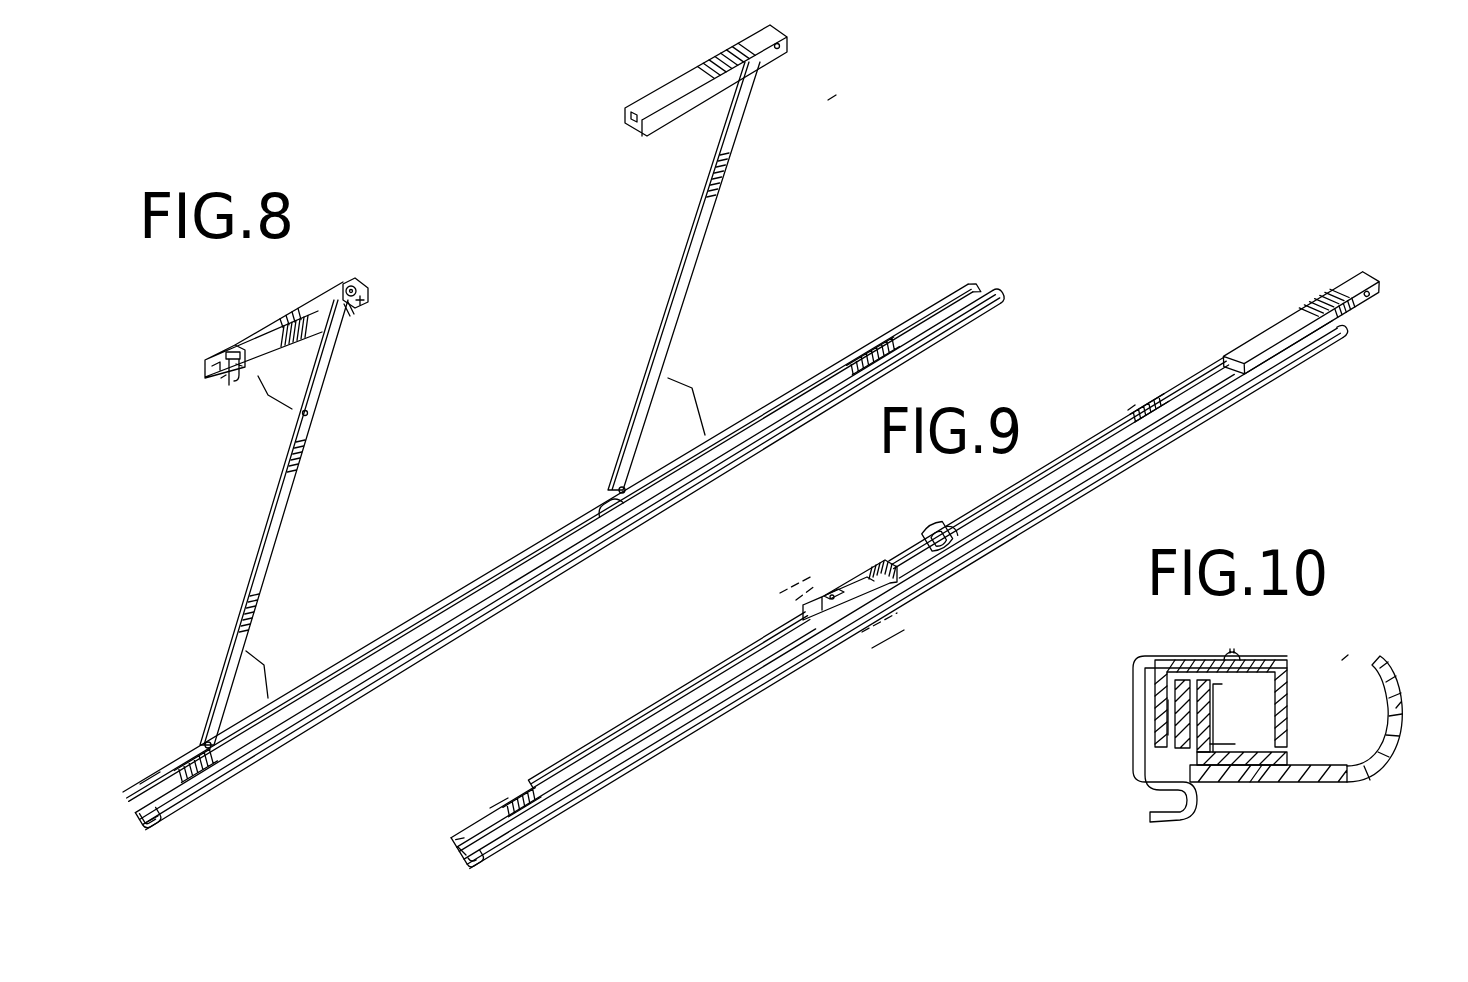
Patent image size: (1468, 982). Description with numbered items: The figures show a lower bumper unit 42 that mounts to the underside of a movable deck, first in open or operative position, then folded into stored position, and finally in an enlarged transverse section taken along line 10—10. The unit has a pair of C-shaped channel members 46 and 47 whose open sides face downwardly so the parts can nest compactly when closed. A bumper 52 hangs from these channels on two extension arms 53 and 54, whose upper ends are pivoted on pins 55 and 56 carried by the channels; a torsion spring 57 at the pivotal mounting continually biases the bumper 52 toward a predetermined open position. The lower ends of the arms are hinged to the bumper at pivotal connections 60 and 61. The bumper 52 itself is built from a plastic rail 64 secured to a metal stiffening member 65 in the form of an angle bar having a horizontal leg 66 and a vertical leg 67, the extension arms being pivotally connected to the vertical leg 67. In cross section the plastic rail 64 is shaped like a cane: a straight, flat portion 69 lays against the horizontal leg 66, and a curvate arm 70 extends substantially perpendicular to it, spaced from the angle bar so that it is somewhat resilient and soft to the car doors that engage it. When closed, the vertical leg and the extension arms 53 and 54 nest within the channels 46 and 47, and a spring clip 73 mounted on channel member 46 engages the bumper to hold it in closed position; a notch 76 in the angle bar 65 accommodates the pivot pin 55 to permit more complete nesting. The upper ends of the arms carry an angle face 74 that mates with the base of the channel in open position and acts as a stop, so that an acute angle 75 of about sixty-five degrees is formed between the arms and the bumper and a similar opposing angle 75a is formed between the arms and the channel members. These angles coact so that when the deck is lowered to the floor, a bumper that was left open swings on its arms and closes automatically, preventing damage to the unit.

In FIG. 9, the section line 10— 10 is at (830, 621).
In FIG. 8, the lower bumper unit 42 is at (836, 95).
In FIG. 9, the lower bumper unit 42 is at (1130, 400).
In FIG. 10, the lower bumper unit 42 is at (1352, 652).
In FIG. 8, the C-shaped channel member 46 is at (300, 330).
In FIG. 9, the C-shaped channel member 46 is at (858, 578).
In FIG. 10, the C-shaped channel member 46 is at (1280, 660).
In FIG. 8, the C-shaped channel member 47 is at (657, 97).
In FIG. 9, the C-shaped channel member 47 is at (1337, 298).
In FIG. 8, the bumper 52 is at (406, 678).
In FIG. 9, the bumper 52 is at (765, 700).
In FIG. 10, the bumper 52 is at (1410, 692).
In FIG. 8, the extension arm 53 is at (282, 506).
In FIG. 10, the extension arm 53 is at (1183, 690).
In FIG. 8, the extension arm 54 is at (700, 288).
In FIG. 8, the pin 55 is at (366, 303).
In FIG. 10, the pin 55 is at (1172, 703).
In FIG. 8, the pin 56 is at (777, 50).
In FIG. 8, the torsion spring 57 is at (350, 316).
In FIG. 8, the pivotal connection 60 is at (208, 742).
In FIG. 10, the pivotal connection 60 is at (1205, 700).
In FIG. 8, the pivotal connection 61 is at (620, 487).
In FIG. 8, the plastic rail 64 is at (142, 833).
In FIG. 9, the plastic rail 64 is at (450, 850).
In FIG. 10, the plastic rail 64 is at (1281, 778).
In FIG. 8, the metal stiffening member 65 is at (150, 778).
In FIG. 9, the metal stiffening member 65 is at (498, 795).
In FIG. 10, the metal stiffening member 65 is at (1243, 738).
In FIG. 10, the horizontal leg 66 is at (1245, 754).
In FIG. 10, the vertical leg 67 is at (1215, 688).
In FIG. 10, the straight flat portion 69 is at (1255, 782).
In FIG. 10, the curvate arm 70 is at (1397, 712).
In FIG. 8, the spring clip 73 is at (236, 380).
In FIG. 9, the spring clip 73 is at (834, 585).
In FIG. 10, the spring clip 73 is at (1135, 775).
In FIG. 8, the angle face 74 is at (346, 290).
In FIG. 8, the acute angle 75 is at (692, 388).
In FIG. 8, the opposing angle 75a is at (268, 395).
In FIG. 9, the notch 76 is at (938, 543).